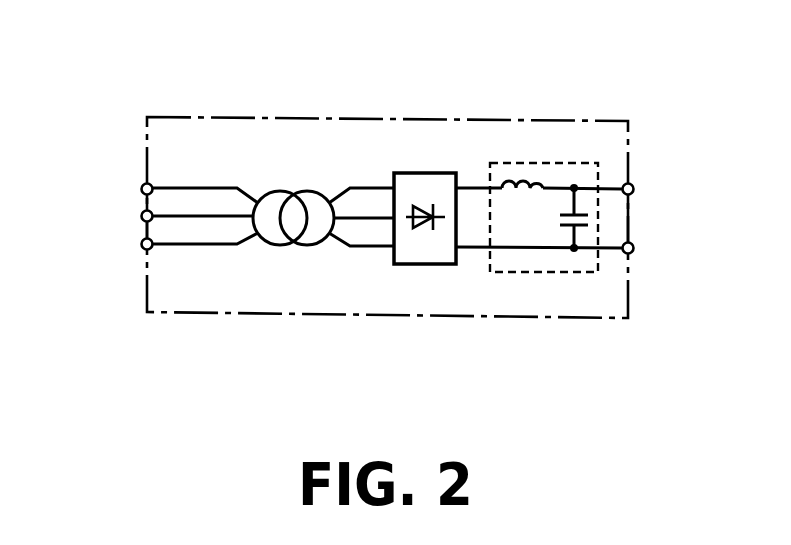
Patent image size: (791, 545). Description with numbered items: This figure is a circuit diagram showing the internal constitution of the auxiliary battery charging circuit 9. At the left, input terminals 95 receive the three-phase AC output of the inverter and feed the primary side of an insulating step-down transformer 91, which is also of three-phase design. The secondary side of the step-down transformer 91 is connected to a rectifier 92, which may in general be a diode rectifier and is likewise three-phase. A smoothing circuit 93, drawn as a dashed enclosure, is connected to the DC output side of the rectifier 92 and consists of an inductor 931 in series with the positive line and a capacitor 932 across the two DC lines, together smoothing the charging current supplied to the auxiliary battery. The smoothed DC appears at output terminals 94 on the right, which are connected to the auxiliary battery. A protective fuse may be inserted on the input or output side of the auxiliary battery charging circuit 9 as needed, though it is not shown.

The auxiliary battery charging circuit 9 is at (349, 117).
The insulating step-down transformer 91 is at (287, 191).
The rectifier 92 is at (425, 173).
The smoothing circuit 93 is at (598, 144).
The inductor 931 is at (513, 178).
The capacitor 932 is at (594, 218).
The output terminals 94 is at (633, 186).
The input terminals 95 is at (141, 189).